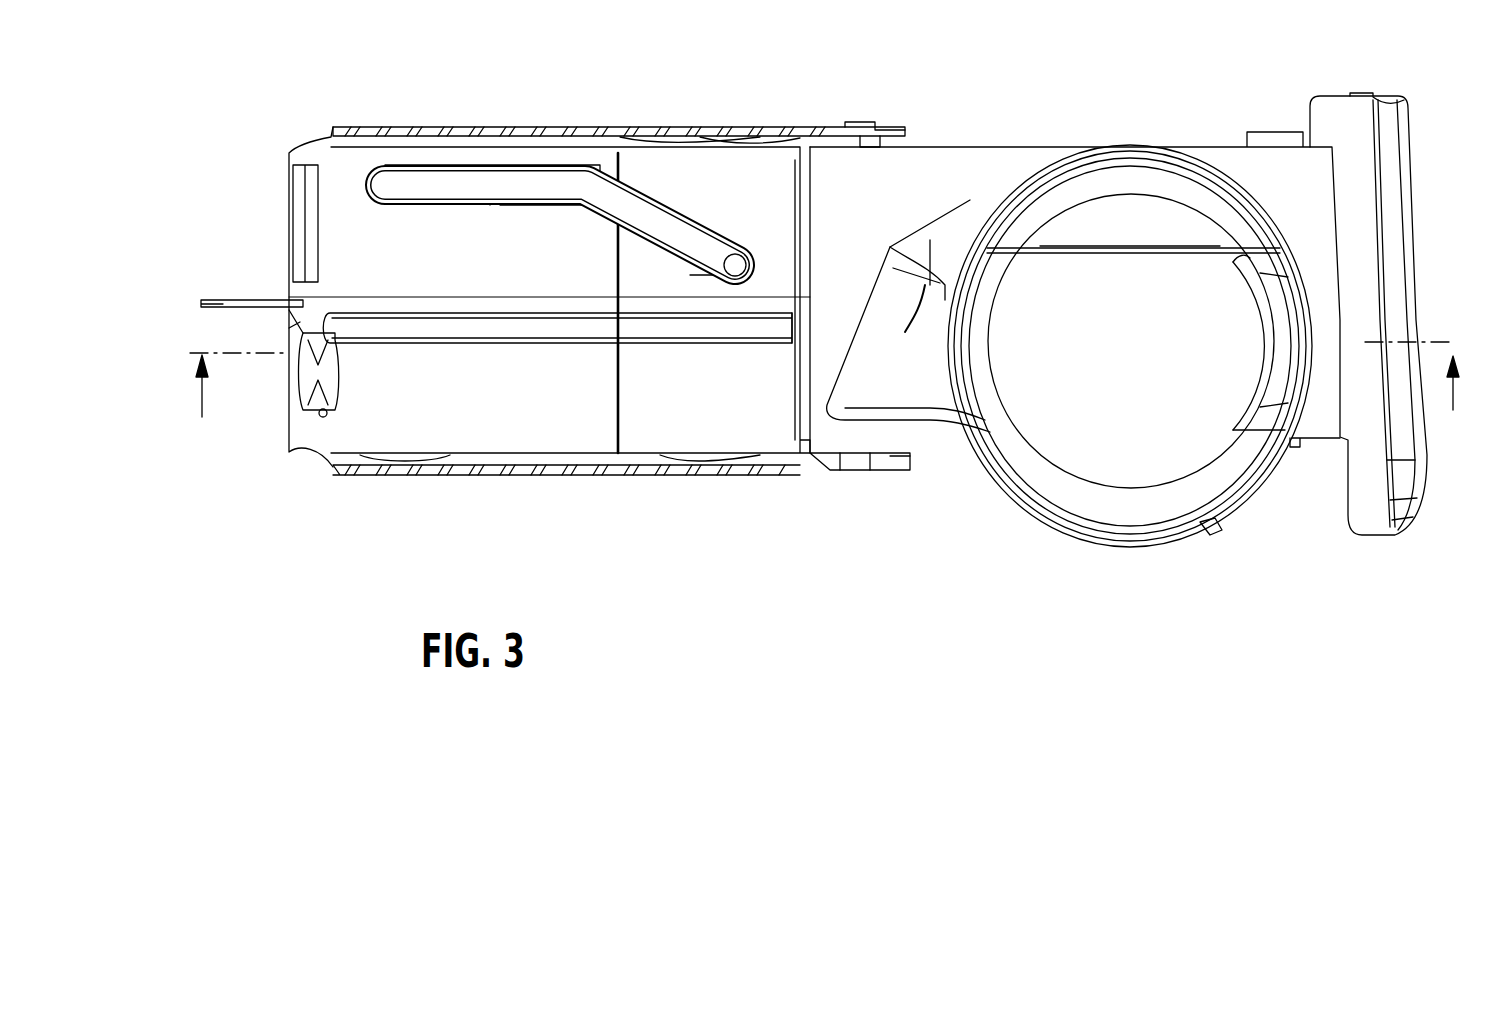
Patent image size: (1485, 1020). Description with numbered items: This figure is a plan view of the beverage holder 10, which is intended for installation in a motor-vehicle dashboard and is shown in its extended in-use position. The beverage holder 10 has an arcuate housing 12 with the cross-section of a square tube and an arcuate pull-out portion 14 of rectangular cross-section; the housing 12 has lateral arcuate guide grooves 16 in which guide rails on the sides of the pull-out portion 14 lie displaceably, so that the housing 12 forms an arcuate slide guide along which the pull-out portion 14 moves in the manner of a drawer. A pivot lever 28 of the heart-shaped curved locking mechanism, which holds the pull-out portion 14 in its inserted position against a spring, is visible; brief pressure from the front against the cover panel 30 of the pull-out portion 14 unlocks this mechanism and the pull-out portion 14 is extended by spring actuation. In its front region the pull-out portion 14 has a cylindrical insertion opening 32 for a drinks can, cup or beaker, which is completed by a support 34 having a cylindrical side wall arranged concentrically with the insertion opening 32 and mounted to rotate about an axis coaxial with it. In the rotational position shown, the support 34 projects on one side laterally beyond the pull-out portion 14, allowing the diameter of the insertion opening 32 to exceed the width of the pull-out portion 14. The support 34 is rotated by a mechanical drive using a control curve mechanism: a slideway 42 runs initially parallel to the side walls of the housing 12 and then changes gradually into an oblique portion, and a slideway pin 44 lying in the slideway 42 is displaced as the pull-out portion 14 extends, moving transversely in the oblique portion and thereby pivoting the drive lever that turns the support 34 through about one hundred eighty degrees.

The beverage holder 10 is at (920, 571).
The housing 12 is at (465, 427).
The pull-out portion 14 is at (1075, 301).
The guide grooves 16 is at (703, 133).
The pivot lever 28 is at (310, 367).
The cover panel 30 is at (1352, 120).
The insertion opening 32 is at (1120, 234).
The support 34 is at (1212, 528).
The slideway 42 is at (637, 213).
The slideway pin 44 is at (742, 262).